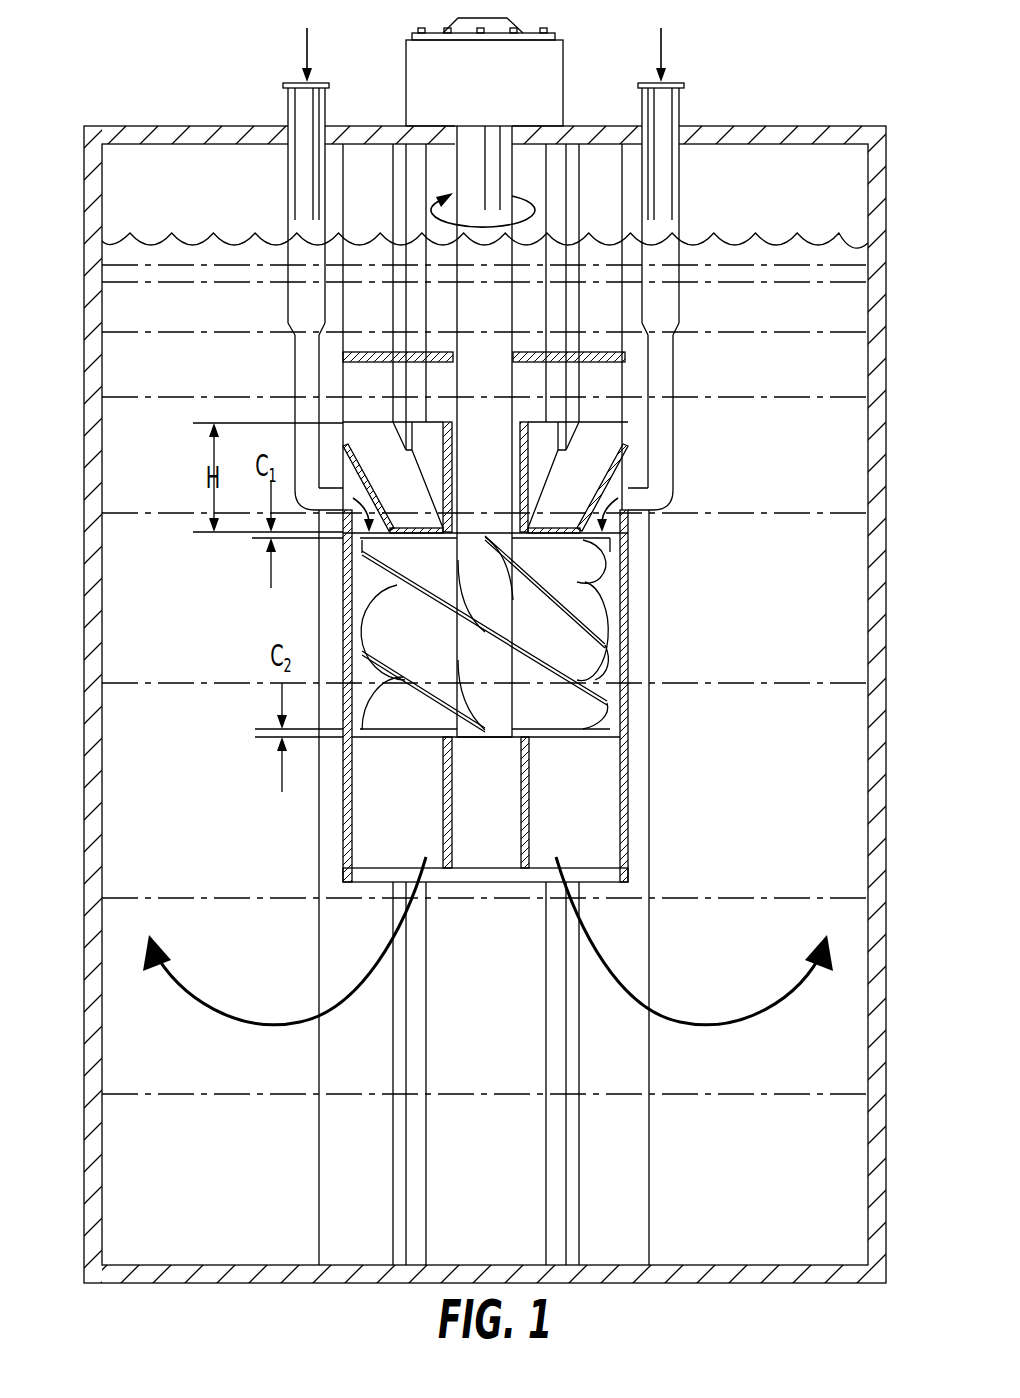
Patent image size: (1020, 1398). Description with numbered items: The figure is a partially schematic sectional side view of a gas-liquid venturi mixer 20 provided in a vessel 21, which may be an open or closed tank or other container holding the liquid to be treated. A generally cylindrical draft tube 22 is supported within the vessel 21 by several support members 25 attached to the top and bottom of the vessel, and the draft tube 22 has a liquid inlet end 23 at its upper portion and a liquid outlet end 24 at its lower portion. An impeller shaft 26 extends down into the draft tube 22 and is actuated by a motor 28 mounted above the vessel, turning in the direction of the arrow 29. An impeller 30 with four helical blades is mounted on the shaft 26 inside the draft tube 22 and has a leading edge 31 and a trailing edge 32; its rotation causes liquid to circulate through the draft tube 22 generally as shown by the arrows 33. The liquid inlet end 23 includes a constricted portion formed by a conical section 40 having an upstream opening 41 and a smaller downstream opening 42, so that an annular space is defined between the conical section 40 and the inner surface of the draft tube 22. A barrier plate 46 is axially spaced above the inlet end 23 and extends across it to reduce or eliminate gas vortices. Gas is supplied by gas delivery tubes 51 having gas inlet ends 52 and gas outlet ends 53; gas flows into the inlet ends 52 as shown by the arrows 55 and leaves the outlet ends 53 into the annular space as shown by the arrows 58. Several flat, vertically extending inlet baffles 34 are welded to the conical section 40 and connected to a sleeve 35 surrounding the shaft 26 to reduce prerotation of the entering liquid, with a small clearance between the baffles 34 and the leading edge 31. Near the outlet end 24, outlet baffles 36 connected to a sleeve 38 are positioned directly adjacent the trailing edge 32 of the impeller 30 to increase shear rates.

The venturi mixer 20 is at (768, 78).
The vessel 21 is at (886, 347).
The draft tube 22 is at (632, 616).
The liquid inlet end 23 is at (627, 537).
The liquid outlet end 24 is at (628, 874).
The support members 25 is at (633, 1067).
The impeller shaft 26 is at (463, 307).
The motor 28 is at (558, 58).
The arrow indicating direction of rotation 29 is at (432, 217).
The impeller 30 is at (592, 645).
The leading edge 31 is at (595, 546).
The trailing edge 32 is at (620, 706).
The arrows indicating liquid circulation 33 is at (704, 1028).
The inlet baffles 34 is at (427, 462).
The sleeve 35 is at (528, 427).
The outlet baffles 36 is at (607, 797).
The sleeve 38 is at (530, 768).
The conical section 40 is at (562, 487).
The upstream opening 41 is at (607, 423).
The downstream opening 42 is at (537, 533).
The barrier plate 46 is at (592, 352).
The gas delivery tubes 51 is at (680, 203).
The gas inlet ends 52 is at (682, 84).
The gas outlet ends 53 is at (632, 498).
The arrows indicating gas flow into inlet ends 55 is at (662, 32).
The arrows indicating gas flow into draft tube 58 is at (610, 520).